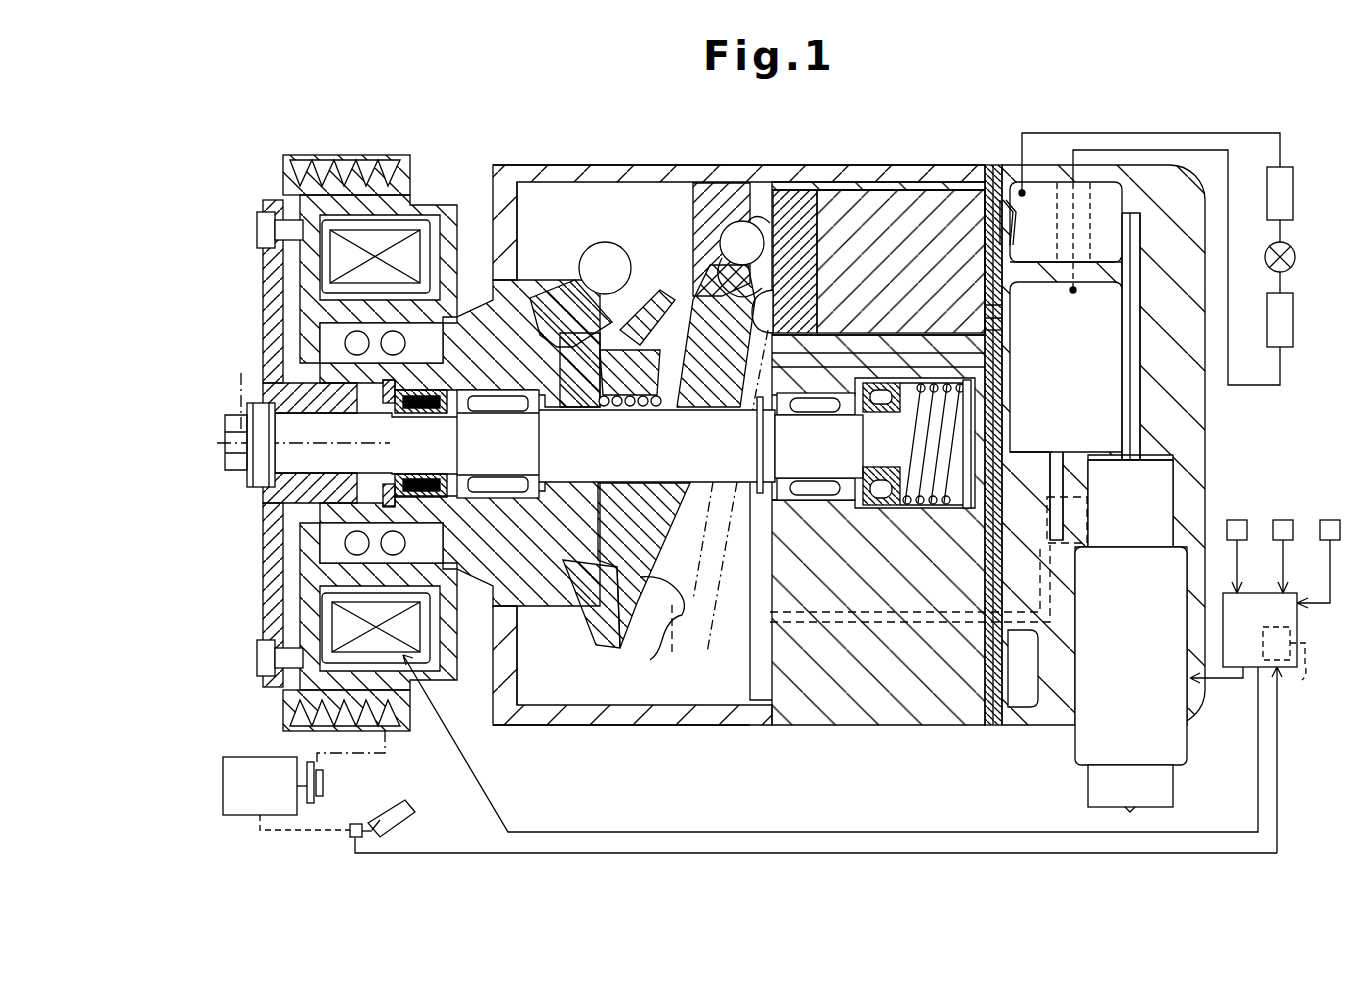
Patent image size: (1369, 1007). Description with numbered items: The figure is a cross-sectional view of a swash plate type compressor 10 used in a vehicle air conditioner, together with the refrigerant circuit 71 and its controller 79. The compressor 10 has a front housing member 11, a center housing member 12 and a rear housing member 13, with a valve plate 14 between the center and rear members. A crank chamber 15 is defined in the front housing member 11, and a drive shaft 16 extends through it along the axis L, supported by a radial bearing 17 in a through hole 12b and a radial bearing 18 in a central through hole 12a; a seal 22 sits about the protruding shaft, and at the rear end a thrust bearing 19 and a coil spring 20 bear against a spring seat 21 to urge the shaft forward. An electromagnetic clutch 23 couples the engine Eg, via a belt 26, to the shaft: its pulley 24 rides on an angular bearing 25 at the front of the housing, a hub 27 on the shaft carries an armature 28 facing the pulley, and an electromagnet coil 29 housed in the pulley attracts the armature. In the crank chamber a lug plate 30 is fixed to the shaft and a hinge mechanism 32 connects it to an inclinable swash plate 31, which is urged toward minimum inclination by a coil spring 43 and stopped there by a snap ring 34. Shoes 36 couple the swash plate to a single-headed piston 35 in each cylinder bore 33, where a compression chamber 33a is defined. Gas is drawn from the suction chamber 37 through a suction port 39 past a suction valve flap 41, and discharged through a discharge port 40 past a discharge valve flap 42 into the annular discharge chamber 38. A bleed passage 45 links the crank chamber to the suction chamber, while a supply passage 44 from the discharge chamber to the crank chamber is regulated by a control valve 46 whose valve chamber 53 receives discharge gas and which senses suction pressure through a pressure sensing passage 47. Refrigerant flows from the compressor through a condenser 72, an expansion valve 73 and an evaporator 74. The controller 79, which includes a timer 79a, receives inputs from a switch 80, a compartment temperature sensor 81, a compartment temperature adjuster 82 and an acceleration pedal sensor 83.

The compressor 10 is at (548, 131).
The front housing member 11 is at (660, 727).
The center housing member 12 is at (861, 727).
The through hole 12a is at (850, 505).
The through hole 12b is at (450, 412).
The rear housing member 13 is at (1205, 407).
The valve plate 14 is at (994, 182).
The crank chamber 15 is at (614, 686).
The drive shaft 16 is at (706, 483).
The radial bearing 17 is at (502, 402).
The radial bearing 18 is at (814, 404).
The thrust bearing 19 is at (884, 506).
The coil spring 20 is at (916, 512).
The spring seat 21 is at (968, 510).
The seal 22 is at (435, 493).
The clutch 23 is at (374, 156).
The pulley 24 is at (400, 191).
The angular bearing 25 is at (345, 545).
The belt 26 is at (393, 733).
The hub 27 is at (260, 496).
The armature 28 is at (286, 607).
The electromagnet coil 29 is at (345, 252).
The lug plate 30 is at (562, 650).
The swash plate 31 is at (676, 475).
The hinge mechanism 32 is at (588, 252).
The cylinder bore 33 is at (870, 189).
The compression chamber 33a is at (980, 197).
The snap ring 34 is at (723, 520).
The single-headed piston 35 is at (833, 214).
The shoes 36 is at (762, 222).
The suction chamber 37 is at (1105, 318).
The discharge chamber 38 is at (1120, 226).
The suction port 39 is at (1002, 316).
The discharge port 40 is at (1011, 234).
The suction valve flap 41 is at (1000, 318).
The discharge valve flap 42 is at (1014, 212).
The coil spring 43 is at (639, 398).
The supply passage 44 is at (1129, 368).
The bleed passage 45 is at (749, 415).
The control valve 46 is at (1143, 644).
The pressure sensing passage 47 is at (1058, 452).
The valve chamber 53 is at (1152, 470).
The refrigerant circuit 71 is at (1267, 131).
The condenser 72 is at (1293, 168).
The expansion valve 73 is at (1296, 258).
The evaporator 74 is at (1293, 297).
The controller 79 is at (1300, 615).
The timer 79a is at (1299, 665).
The switch 80 is at (1237, 520).
The compartment temperature sensor 81 is at (1284, 520).
The compartment temperature adjuster 82 is at (1331, 520).
The acceleration pedal sensor 83 is at (352, 824).
The engine Eg is at (223, 757).
The axis L is at (239, 390).